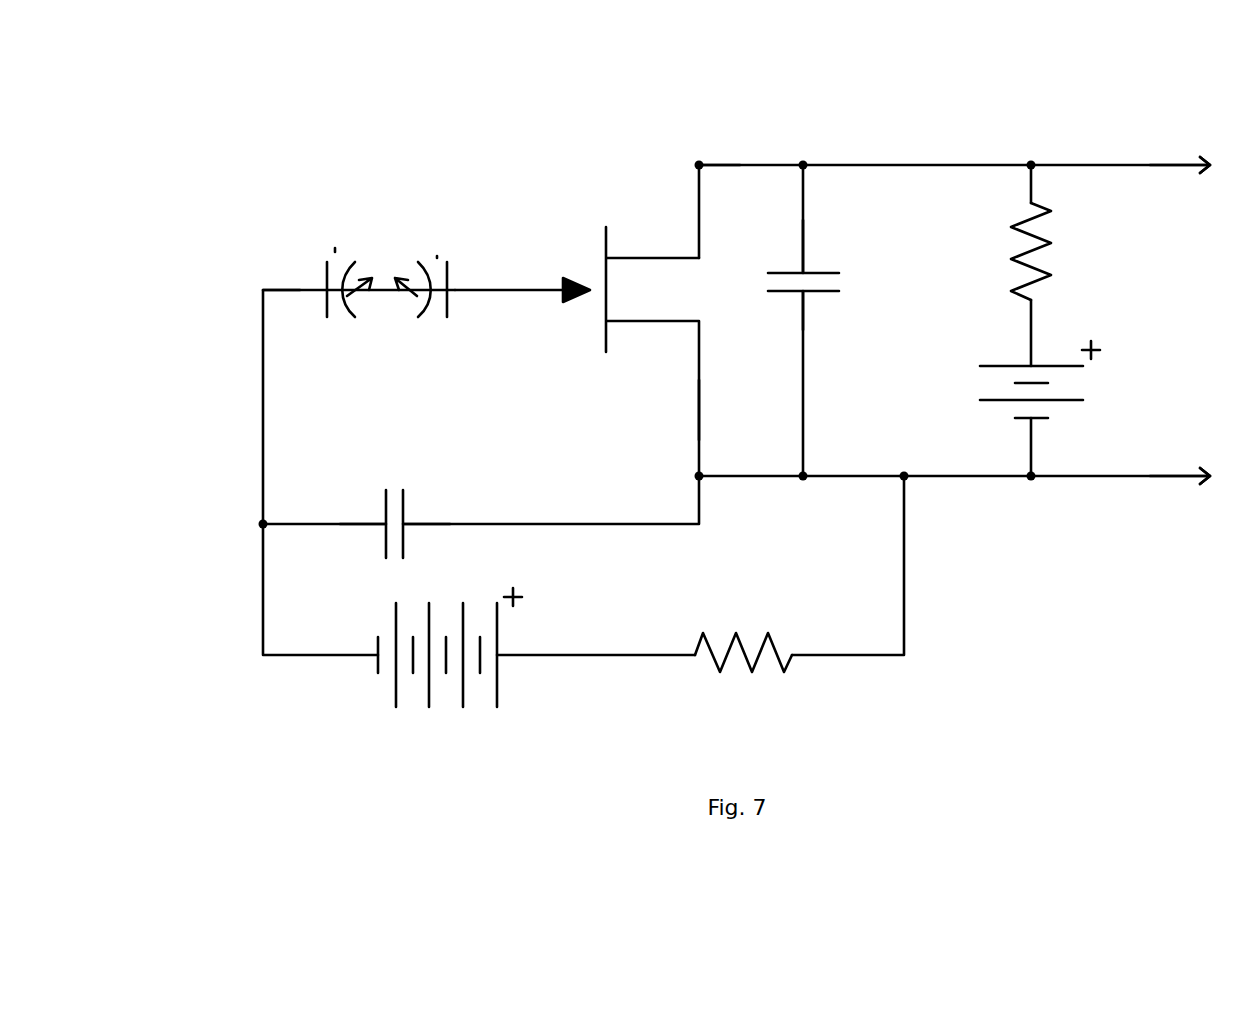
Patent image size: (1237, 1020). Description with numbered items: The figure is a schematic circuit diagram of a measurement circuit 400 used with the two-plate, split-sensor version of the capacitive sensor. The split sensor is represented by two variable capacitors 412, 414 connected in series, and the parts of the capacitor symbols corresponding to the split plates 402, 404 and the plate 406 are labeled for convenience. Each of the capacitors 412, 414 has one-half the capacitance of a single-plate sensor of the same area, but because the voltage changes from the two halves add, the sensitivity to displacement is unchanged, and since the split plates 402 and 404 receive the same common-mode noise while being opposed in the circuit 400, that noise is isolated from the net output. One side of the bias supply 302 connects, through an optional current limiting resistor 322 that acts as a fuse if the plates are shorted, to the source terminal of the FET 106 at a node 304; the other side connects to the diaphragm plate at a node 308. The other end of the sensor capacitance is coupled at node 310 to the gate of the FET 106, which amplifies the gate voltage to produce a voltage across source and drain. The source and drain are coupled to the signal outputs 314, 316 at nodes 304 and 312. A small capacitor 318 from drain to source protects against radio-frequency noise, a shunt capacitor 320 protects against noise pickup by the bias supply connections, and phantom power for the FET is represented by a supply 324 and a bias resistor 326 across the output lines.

The measurement circuit 400 is at (283, 170).
The node 308 is at (262, 290).
The split plate 402 is at (328, 318).
The split plate 404 is at (448, 318).
The plate 406 is at (386, 296).
The variable capacitor 412 is at (335, 252).
The variable capacitor 414 is at (437, 258).
The node 310 is at (512, 292).
The FET 106 is at (644, 258).
The node 312 is at (702, 164).
The node 304 is at (698, 415).
The signal output 316 is at (1190, 166).
The signal output 314 is at (1186, 478).
The capacitor 318 is at (839, 292).
The shunt capacitor 320 is at (405, 508).
The current limiting resistor 322 is at (794, 660).
The bias resistor 326 is at (1022, 236).
The supply 324 is at (1008, 366).
The bias supply 302 is at (410, 700).